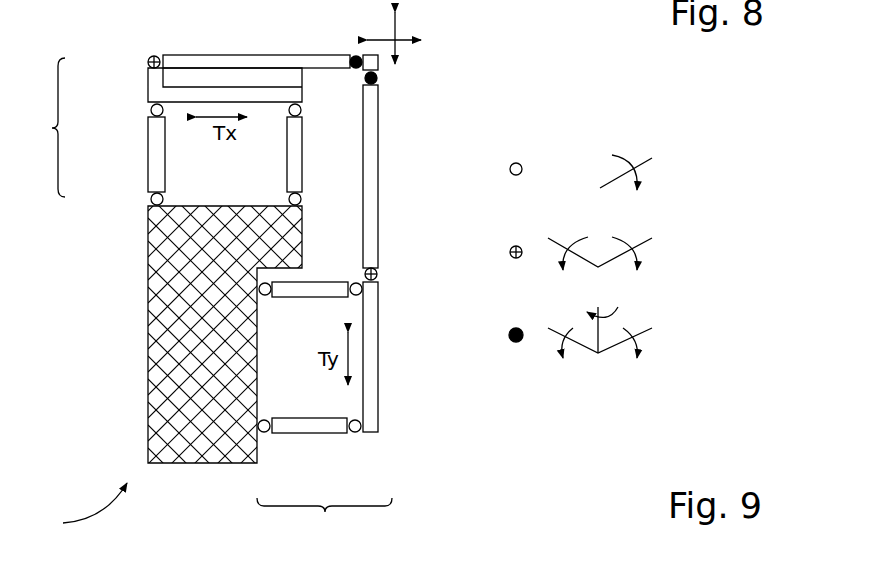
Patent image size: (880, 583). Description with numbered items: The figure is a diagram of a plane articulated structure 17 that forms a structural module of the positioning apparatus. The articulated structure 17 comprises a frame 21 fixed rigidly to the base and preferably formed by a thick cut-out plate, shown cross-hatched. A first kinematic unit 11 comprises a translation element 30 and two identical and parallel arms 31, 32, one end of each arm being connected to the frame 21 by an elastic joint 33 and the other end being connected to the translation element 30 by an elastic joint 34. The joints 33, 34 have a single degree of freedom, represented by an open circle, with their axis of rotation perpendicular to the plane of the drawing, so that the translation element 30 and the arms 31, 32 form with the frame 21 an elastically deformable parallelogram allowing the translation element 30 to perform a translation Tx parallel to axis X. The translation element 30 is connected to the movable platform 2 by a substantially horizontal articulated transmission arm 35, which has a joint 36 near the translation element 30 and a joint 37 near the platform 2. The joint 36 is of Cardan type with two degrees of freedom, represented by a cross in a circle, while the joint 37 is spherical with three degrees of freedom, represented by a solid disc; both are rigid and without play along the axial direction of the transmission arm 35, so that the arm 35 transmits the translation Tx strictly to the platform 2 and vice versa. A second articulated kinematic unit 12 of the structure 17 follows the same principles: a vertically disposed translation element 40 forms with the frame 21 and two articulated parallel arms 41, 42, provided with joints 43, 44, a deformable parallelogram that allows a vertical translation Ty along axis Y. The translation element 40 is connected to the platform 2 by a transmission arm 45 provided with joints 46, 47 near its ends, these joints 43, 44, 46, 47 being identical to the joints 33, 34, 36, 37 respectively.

The platform 2 is at (366, 55).
The kinematic unit 11 is at (45, 127).
The second articulated kinematic unit 12 is at (324, 520).
The articulated structure 17 is at (81, 512).
The frame 21 is at (155, 296).
The translation element 30 is at (198, 95).
The arm 31 is at (158, 168).
The arm 32 is at (300, 160).
The elastic joint 33 is at (152, 199).
The elastic joint 34 is at (150, 110).
The articulated transmission arm 35 is at (237, 61).
The joint 36 is at (152, 56).
The joint 37 is at (352, 58).
The translation element 40 is at (375, 395).
The articulated parallel arm 41 is at (328, 433).
The articulated parallel arm 42 is at (330, 296).
The joint 43 is at (268, 297).
The joint 44 is at (362, 290).
The transmission arm 45 is at (375, 232).
The joint 46 is at (378, 274).
The joint 47 is at (378, 78).